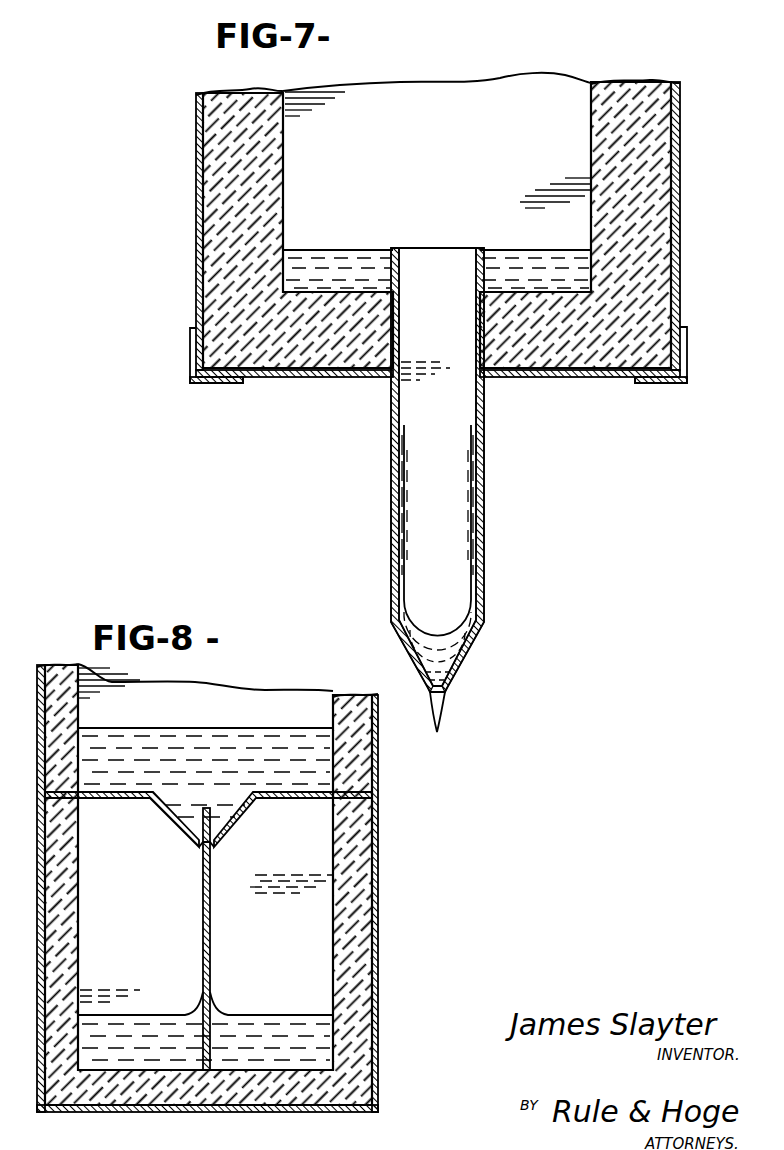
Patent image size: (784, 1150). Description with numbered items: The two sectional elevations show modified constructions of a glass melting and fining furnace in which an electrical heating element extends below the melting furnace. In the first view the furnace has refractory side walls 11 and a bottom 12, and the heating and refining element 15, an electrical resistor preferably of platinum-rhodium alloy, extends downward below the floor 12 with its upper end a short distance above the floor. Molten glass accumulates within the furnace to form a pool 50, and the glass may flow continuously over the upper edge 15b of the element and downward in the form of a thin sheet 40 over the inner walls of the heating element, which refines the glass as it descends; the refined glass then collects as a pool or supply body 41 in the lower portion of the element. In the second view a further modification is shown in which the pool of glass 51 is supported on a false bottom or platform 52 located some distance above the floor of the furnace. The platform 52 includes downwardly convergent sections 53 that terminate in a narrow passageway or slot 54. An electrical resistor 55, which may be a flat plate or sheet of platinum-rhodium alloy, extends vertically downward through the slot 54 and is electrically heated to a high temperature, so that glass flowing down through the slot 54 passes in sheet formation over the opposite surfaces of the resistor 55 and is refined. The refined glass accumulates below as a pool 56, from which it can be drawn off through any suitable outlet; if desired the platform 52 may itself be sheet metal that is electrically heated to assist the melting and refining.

In FIG. 7, the side walls 11 is at (655, 165).
In FIG. 7, the bottom 12 is at (546, 366).
In FIG. 7, the heating and refining element 15 is at (484, 505).
In FIG. 7, the upper edge 15b is at (398, 248).
In FIG. 7, the sheet 40 is at (402, 503).
In FIG. 7, the supply body 41 is at (452, 600).
In FIG. 7, the pool 50 is at (341, 228).
In FIG. 8, the pool of glass 51 is at (190, 700).
In FIG. 8, the platform 52 is at (114, 796).
In FIG. 8, the downwardly convergent sections 53 is at (228, 815).
In FIG. 8, the slot 54 is at (200, 842).
In FIG. 8, the electrical resistor 55 is at (212, 946).
In FIG. 8, the pool 56 is at (290, 995).